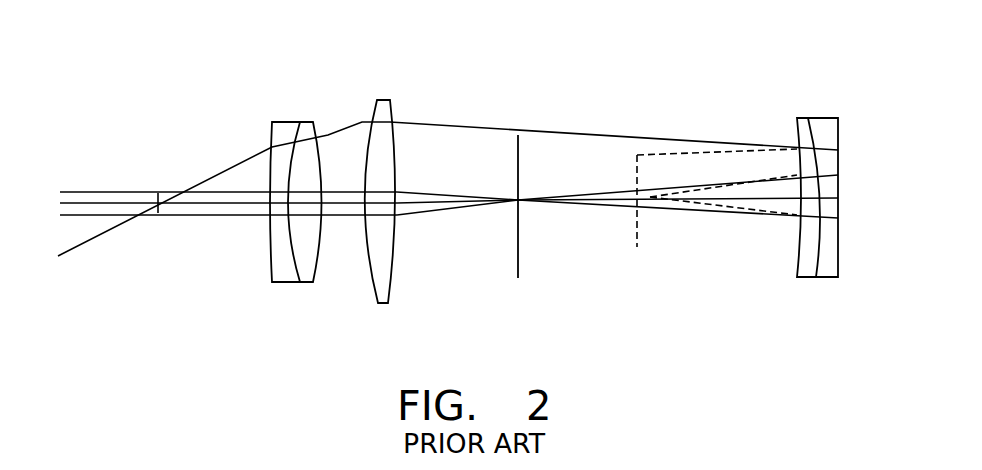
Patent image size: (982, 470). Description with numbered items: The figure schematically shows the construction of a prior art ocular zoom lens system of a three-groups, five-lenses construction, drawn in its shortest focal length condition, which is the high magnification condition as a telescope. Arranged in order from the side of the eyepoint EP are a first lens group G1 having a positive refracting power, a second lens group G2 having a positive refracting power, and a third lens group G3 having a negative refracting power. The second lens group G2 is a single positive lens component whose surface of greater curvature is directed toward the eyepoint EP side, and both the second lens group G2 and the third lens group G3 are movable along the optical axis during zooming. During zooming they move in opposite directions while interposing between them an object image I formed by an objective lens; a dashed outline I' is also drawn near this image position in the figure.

The first lens group G1 is at (313, 94).
The second lens group G2 is at (384, 100).
The third lens group G3 is at (837, 99).
The eyepoint EP is at (158, 207).
The object image I is at (506, 226).
The virtual image plane I' is at (704, 233).